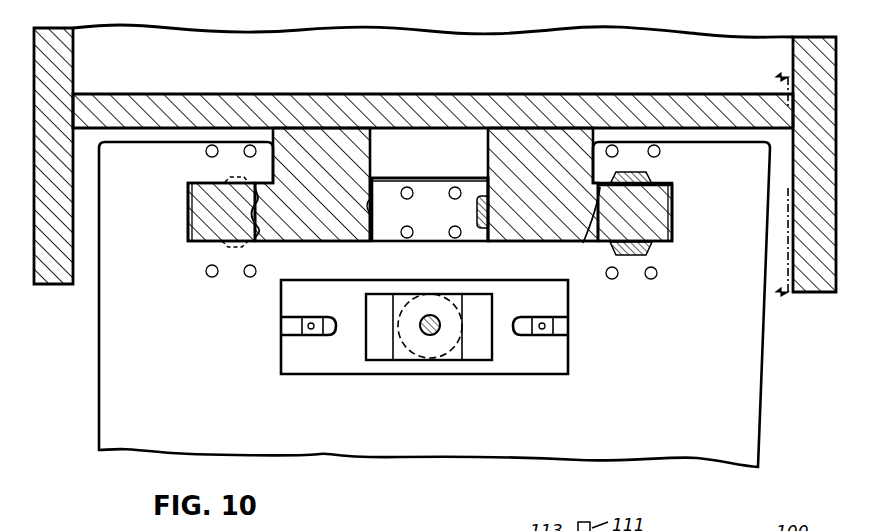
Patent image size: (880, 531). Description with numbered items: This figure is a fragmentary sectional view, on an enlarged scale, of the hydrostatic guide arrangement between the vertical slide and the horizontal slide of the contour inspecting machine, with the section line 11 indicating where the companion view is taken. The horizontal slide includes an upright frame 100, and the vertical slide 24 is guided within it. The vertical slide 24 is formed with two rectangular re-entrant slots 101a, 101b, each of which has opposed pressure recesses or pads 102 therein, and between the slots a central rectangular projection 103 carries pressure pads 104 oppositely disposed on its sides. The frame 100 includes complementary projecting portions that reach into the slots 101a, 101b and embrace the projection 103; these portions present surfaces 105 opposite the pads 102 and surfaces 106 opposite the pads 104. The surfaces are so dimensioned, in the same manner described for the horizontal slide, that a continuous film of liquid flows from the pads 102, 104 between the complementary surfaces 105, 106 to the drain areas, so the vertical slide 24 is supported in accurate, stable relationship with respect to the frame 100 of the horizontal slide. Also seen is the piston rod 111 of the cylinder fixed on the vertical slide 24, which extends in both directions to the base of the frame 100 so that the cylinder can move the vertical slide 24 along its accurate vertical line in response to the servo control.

The upright frame 100 is at (60, 285).
The vertical slide 24 is at (99, 398).
The rectangular re-entrant slot 101a is at (202, 186).
The rectangular re-entrant slot 101b is at (661, 184).
The pressure recesses or pads 102 is at (233, 180).
The central rectangular projection 103 is at (425, 190).
The pressure pads 104 is at (476, 226).
The surfaces 105 is at (258, 200).
The surfaces 106 is at (370, 202).
The piston rod 111 is at (432, 336).
The section line 11- 11 is at (782, 190).